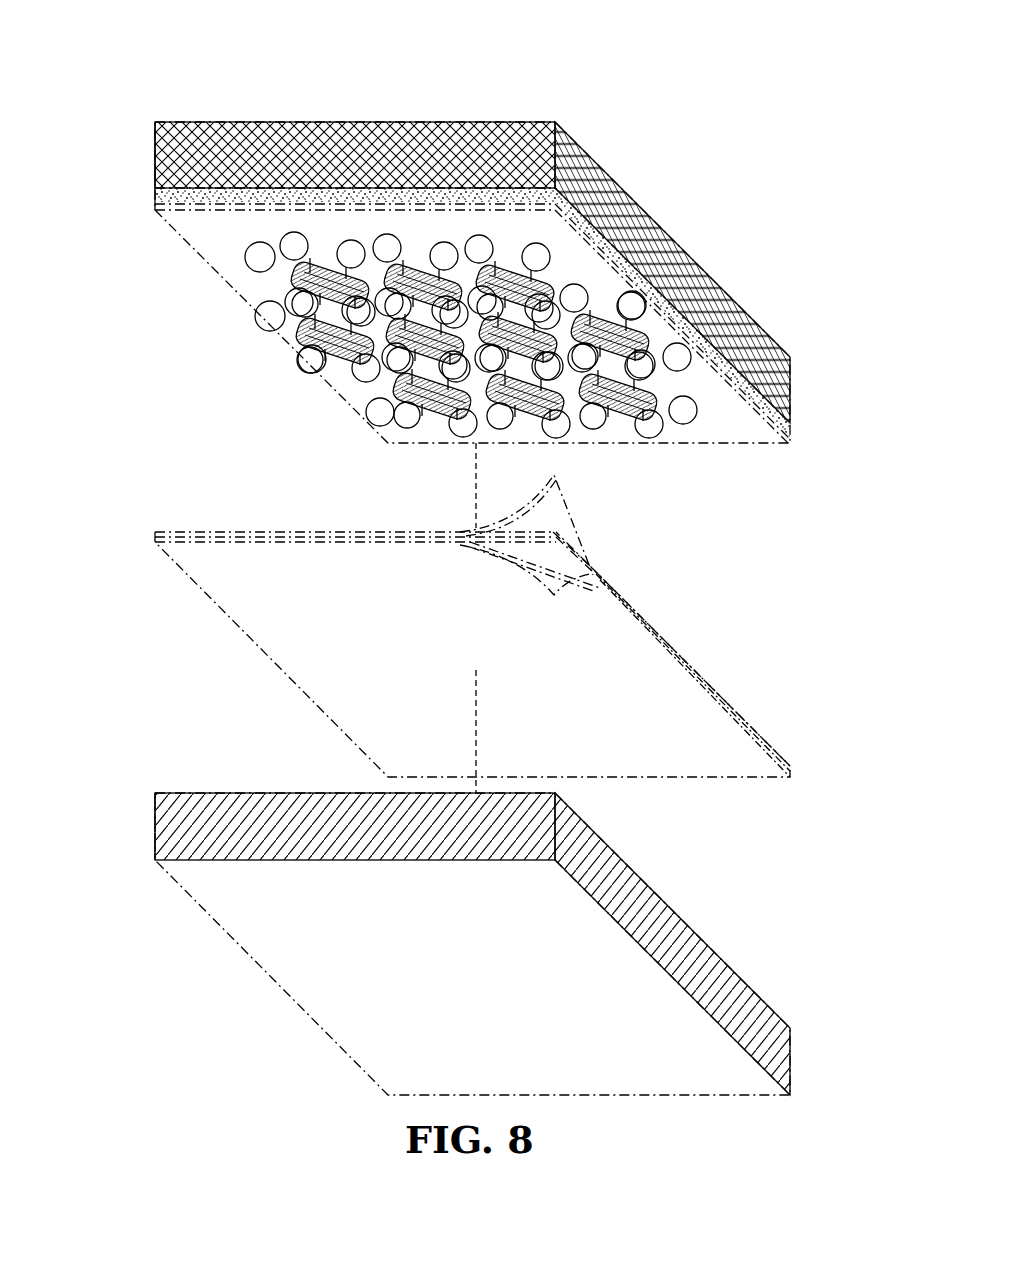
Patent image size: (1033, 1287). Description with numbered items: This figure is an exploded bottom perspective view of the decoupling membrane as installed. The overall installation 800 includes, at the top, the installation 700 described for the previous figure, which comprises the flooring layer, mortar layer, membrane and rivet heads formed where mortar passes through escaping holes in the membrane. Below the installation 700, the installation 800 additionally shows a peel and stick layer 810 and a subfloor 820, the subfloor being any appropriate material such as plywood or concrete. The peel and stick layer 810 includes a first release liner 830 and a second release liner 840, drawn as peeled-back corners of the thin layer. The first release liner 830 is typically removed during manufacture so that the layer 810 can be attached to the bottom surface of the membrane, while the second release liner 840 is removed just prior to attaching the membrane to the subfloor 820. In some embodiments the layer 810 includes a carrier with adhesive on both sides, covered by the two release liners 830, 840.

The installation 800 is at (133, 76).
The installation 700 is at (640, 212).
The peel and stick layer 810 is at (231, 618).
The subfloor 820 is at (280, 985).
The first release liner 830 is at (572, 528).
The second release liner 840 is at (532, 567).